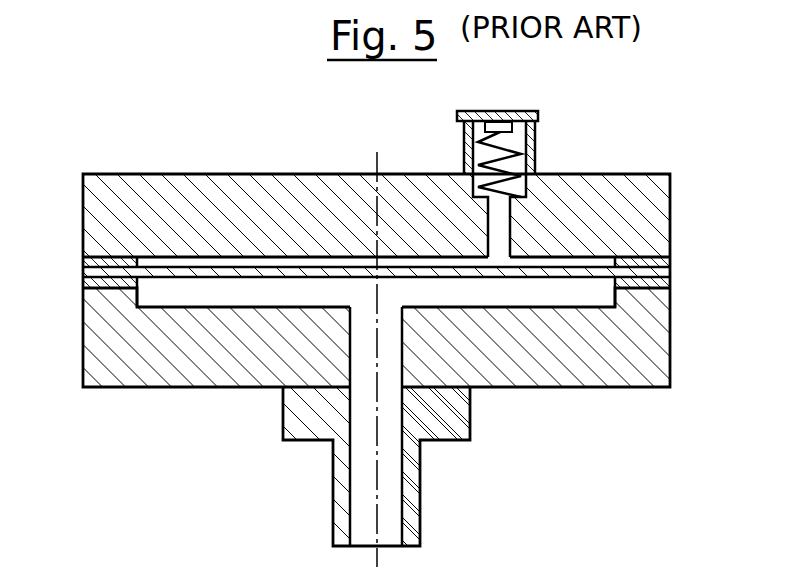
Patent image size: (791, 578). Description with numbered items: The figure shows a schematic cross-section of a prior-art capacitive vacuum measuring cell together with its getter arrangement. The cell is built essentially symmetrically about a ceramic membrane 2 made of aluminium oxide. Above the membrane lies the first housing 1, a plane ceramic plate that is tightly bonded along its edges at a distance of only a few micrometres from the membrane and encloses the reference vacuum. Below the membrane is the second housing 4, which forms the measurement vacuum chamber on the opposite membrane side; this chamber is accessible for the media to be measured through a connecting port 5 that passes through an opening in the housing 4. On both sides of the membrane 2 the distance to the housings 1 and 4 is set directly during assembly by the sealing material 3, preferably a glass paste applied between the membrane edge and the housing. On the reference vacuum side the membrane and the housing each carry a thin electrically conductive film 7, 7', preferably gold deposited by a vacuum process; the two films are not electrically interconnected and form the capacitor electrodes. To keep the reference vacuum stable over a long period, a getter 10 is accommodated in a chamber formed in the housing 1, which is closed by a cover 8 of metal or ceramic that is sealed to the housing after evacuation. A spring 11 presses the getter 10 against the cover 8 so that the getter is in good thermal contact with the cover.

The first housing 1 is at (213, 218).
The ceramic membrane 2 is at (95, 272).
The sealing material 3 is at (645, 262).
The second housing 4 is at (207, 354).
The connecting port 5 is at (448, 419).
The electrically conductive film 7 is at (376, 201).
The electrically conductive film 7' is at (376, 381).
The cover 8 is at (483, 117).
The getter 10 is at (507, 127).
The spring 11 is at (518, 164).